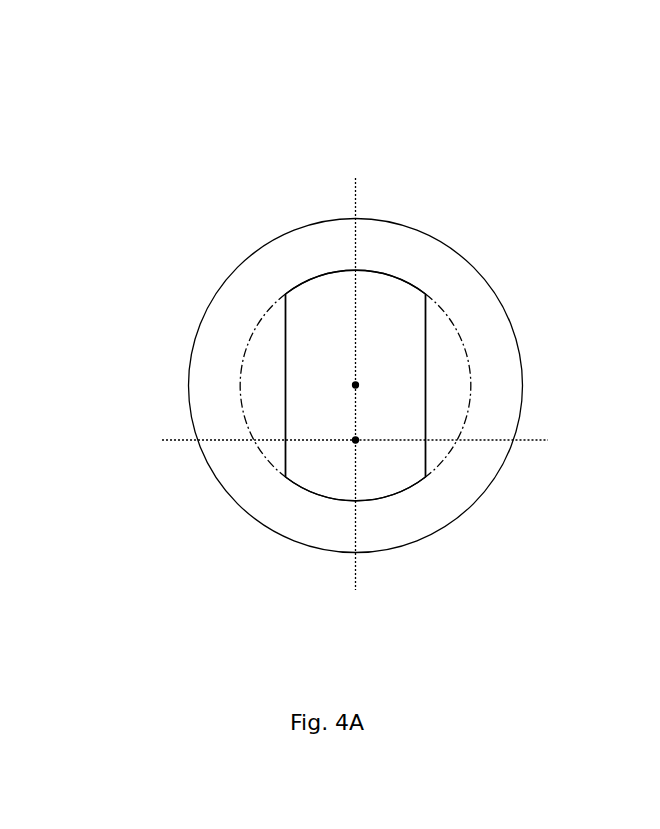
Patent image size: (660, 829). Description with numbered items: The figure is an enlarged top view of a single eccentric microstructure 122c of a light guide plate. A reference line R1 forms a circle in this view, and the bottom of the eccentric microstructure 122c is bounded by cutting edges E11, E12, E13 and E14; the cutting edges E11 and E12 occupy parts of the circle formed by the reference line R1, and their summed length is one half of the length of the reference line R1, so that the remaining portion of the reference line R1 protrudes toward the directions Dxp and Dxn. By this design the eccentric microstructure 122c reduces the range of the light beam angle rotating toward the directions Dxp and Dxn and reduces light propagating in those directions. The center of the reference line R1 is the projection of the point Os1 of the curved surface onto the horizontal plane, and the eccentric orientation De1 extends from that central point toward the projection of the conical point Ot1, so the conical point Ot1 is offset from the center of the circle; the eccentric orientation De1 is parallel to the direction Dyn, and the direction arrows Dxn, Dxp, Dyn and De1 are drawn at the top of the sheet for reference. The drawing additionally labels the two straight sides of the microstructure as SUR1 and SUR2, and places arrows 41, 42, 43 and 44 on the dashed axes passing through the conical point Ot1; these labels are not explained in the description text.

The direction Dxn is at (175, 70).
The direction Dxp is at (175, 70).
The eccentric orientation De1 is at (175, 70).
The direction Dyn is at (175, 103).
The reference line R1 is at (460, 333).
The eccentric microstructure 122c is at (310, 343).
The cutting edge E12 is at (303, 282).
The cutting edge E11 is at (302, 488).
The cutting edge E13 is at (285, 408).
The cutting edge E14 is at (426, 407).
The first side surface SUR1 is at (285, 370).
The second side surface SUR2 is at (426, 371).
The point of the curved surface Os1 is at (379, 397).
The conical point Ot1 is at (378, 452).
The section line direction 41 is at (162, 440).
The section line direction 42 is at (548, 440).
The section line direction 43 is at (356, 178).
The section line direction 44 is at (356, 590).